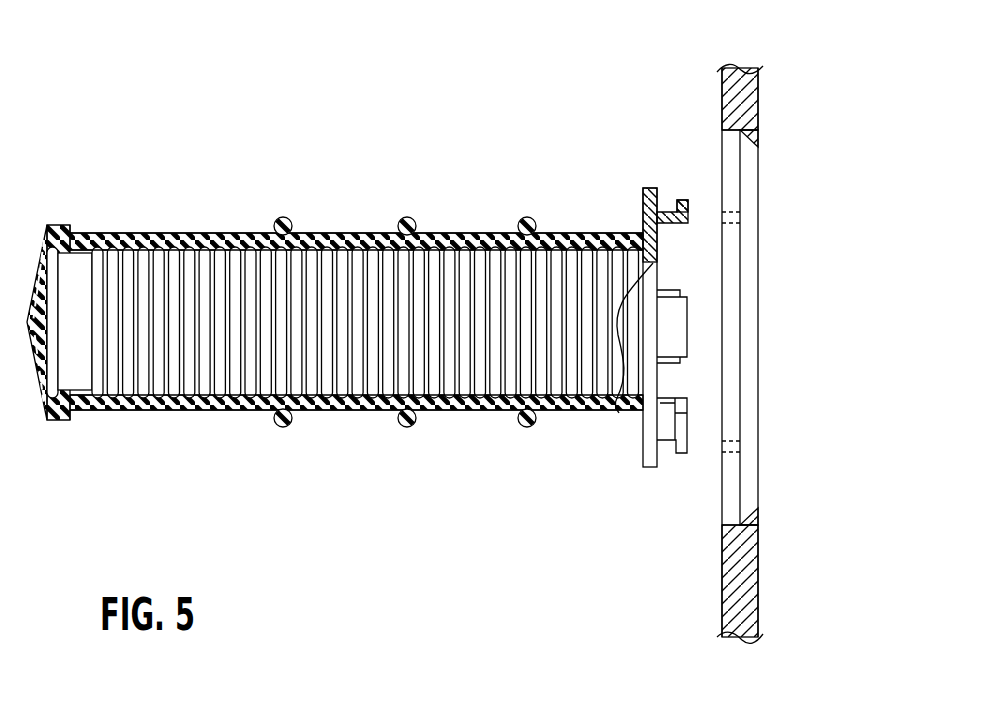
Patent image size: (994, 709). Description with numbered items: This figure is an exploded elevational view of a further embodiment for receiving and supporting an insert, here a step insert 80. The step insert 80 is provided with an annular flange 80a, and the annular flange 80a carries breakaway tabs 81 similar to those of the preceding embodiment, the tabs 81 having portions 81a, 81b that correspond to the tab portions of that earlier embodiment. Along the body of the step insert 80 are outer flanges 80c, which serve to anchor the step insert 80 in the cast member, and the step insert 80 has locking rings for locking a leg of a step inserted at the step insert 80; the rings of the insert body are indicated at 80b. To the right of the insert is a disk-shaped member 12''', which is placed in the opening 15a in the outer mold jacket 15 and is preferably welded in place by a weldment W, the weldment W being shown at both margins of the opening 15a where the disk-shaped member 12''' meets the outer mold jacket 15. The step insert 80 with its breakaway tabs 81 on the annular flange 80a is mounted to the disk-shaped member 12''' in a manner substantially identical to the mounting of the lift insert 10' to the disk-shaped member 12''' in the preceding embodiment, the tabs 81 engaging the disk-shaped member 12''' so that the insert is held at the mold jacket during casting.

The lift insert 10' is at (462, 79).
The step insert 80 is at (340, 337).
The annular flange 80a is at (628, 347).
The threads 80b is at (340, 295).
The outer flanges 80c is at (527, 428).
The tabs 81 is at (651, 112).
The tab portion 81a is at (656, 190).
The tab portion 81b is at (678, 200).
The disk-shaped member 12''' is at (760, 378).
The weldment W is at (748, 135).
The outer mold jacket 15 is at (758, 600).
The opening 15a is at (732, 523).